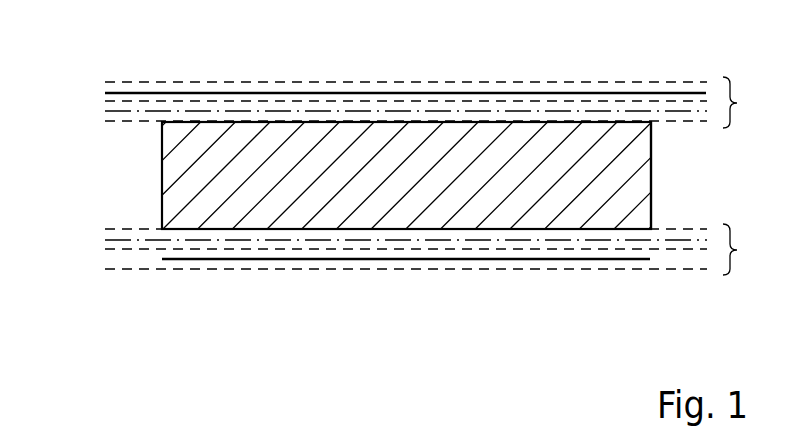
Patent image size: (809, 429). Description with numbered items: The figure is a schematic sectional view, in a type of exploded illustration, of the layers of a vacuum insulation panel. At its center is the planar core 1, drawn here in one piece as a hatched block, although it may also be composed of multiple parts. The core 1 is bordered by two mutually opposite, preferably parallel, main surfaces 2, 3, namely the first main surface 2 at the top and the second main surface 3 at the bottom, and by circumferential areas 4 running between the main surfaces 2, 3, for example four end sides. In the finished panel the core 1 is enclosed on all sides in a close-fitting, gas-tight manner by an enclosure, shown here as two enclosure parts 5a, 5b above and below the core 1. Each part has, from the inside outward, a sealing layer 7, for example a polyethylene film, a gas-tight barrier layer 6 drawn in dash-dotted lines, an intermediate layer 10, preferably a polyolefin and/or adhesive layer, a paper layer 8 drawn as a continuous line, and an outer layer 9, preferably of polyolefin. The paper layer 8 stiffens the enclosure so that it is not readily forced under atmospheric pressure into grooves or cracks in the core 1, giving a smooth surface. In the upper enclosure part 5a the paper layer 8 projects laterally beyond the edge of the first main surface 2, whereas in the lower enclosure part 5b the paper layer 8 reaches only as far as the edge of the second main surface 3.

The core 1 is at (178, 168).
The first main surface 2 is at (543, 122).
The second main surface 3 is at (541, 229).
The circumferential areas 4 is at (652, 174).
The enclosure part 5a is at (440, 102).
The enclosure part 5b is at (440, 249).
The barrier layer 6 is at (108, 118).
The sealing layer 7 is at (125, 122).
The paper layer 8 is at (105, 92).
The outer layer 9 is at (125, 82).
The intermediate layer 10 is at (107, 102).